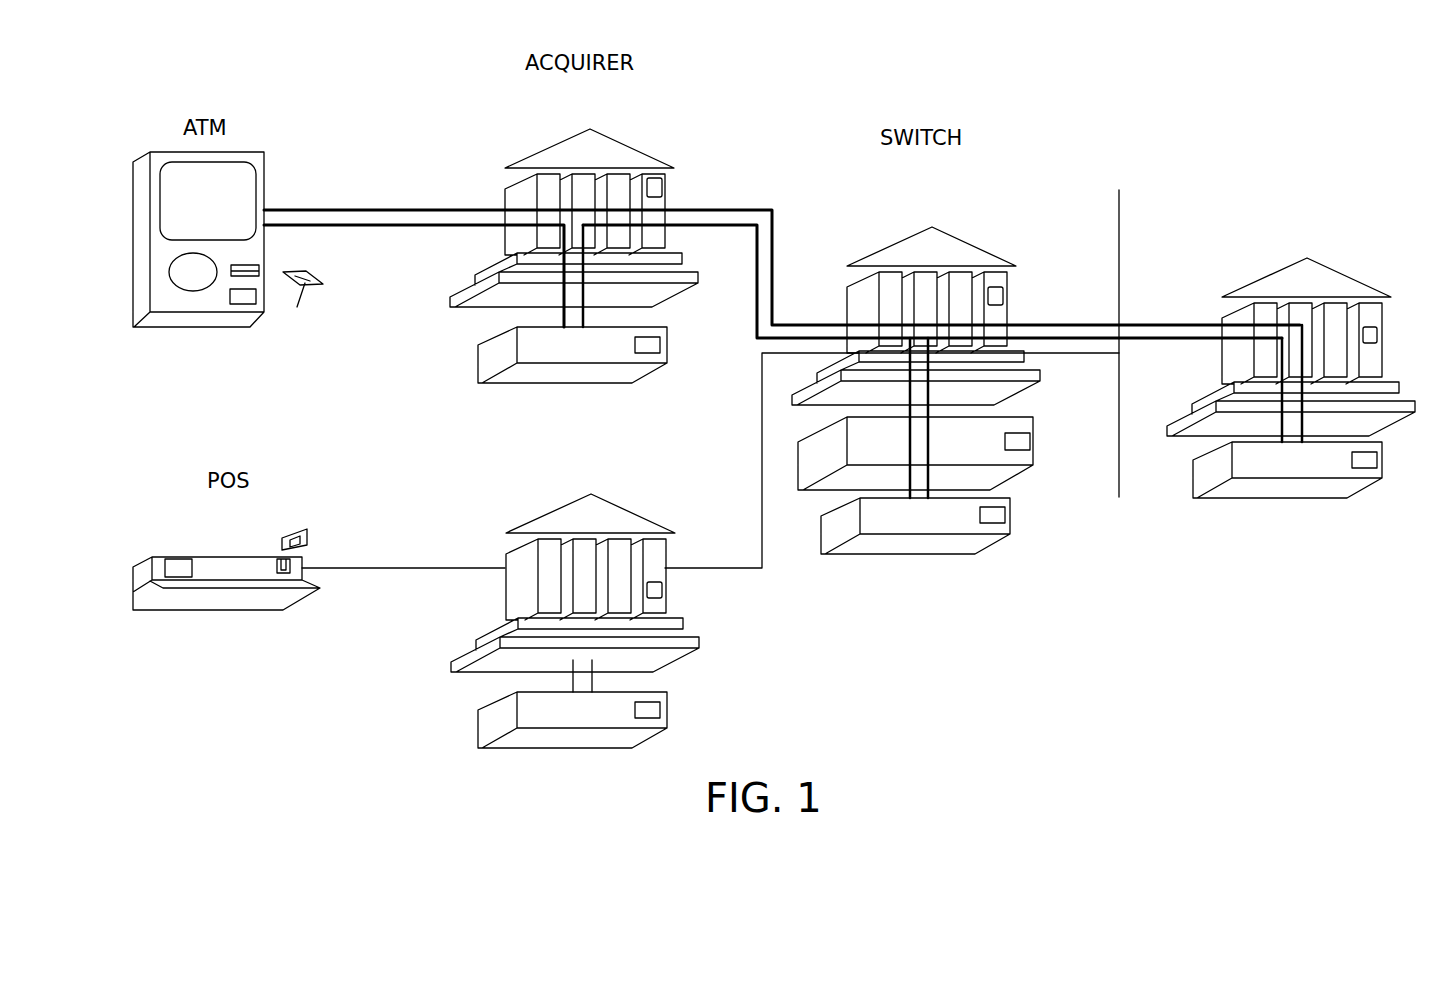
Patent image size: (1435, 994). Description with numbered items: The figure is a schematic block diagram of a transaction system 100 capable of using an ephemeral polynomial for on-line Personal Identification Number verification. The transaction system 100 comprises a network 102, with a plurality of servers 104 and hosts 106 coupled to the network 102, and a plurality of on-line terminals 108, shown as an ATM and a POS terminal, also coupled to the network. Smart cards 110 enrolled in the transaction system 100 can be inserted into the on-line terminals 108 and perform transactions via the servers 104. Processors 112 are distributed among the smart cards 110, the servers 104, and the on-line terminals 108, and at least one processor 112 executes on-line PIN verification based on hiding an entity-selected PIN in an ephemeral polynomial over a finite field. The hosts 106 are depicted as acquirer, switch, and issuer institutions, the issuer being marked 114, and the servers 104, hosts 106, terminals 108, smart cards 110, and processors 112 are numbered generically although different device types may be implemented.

The transaction system 100 is at (1252, 109).
The network 102 is at (1122, 381).
The server 104 is at (563, 383).
The host 106 is at (622, 143).
The on-line terminal 108 is at (198, 328).
The smart card 110 is at (298, 273).
The processor 112 is at (250, 299).
The issuer 114 is at (1318, 191).